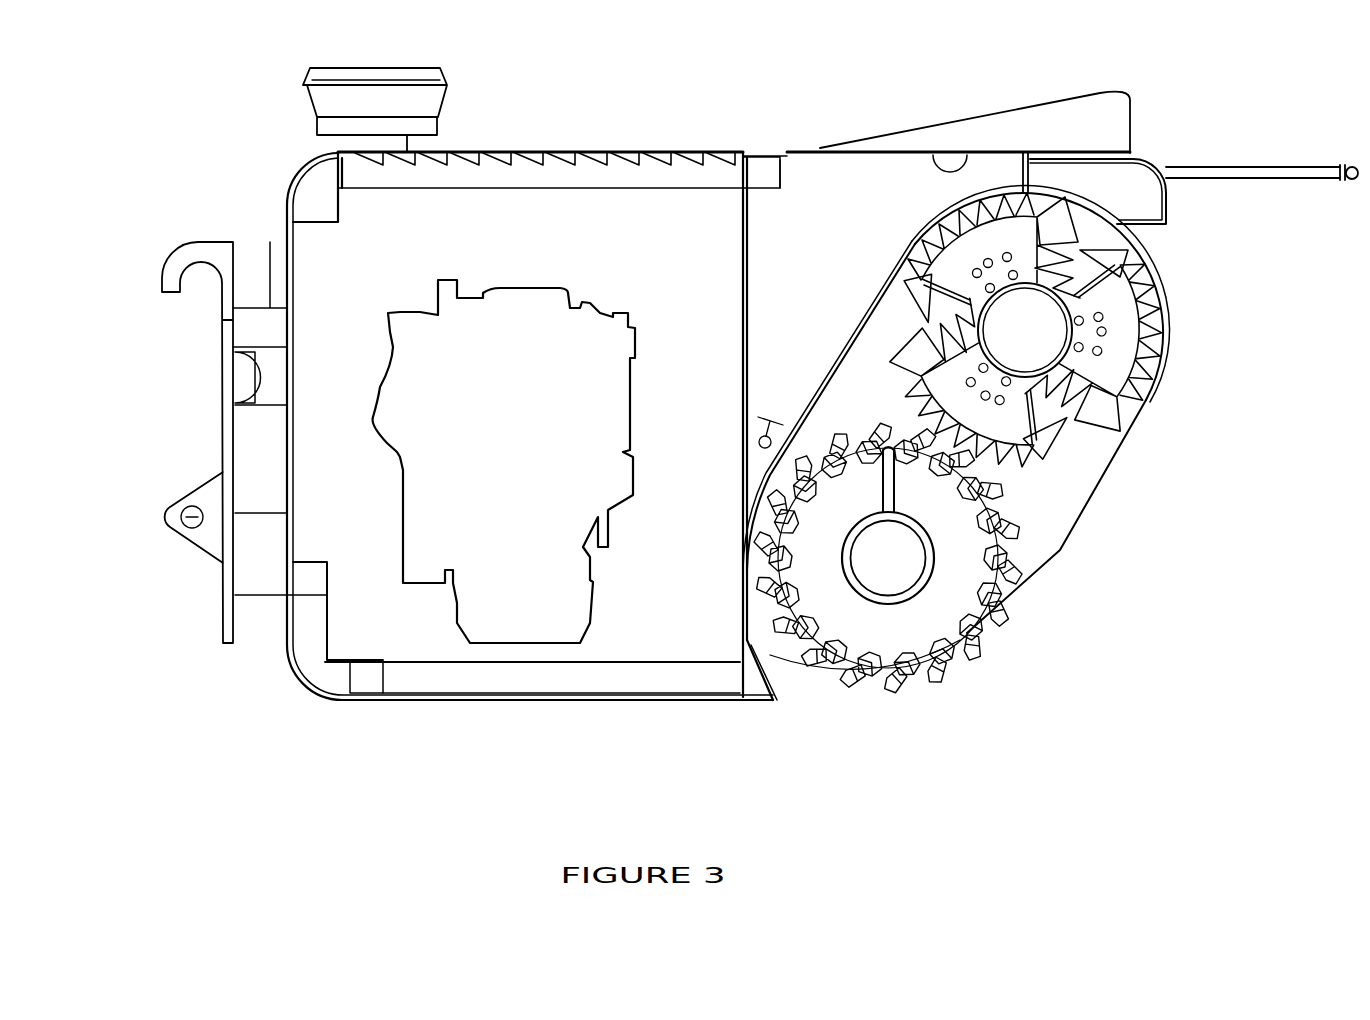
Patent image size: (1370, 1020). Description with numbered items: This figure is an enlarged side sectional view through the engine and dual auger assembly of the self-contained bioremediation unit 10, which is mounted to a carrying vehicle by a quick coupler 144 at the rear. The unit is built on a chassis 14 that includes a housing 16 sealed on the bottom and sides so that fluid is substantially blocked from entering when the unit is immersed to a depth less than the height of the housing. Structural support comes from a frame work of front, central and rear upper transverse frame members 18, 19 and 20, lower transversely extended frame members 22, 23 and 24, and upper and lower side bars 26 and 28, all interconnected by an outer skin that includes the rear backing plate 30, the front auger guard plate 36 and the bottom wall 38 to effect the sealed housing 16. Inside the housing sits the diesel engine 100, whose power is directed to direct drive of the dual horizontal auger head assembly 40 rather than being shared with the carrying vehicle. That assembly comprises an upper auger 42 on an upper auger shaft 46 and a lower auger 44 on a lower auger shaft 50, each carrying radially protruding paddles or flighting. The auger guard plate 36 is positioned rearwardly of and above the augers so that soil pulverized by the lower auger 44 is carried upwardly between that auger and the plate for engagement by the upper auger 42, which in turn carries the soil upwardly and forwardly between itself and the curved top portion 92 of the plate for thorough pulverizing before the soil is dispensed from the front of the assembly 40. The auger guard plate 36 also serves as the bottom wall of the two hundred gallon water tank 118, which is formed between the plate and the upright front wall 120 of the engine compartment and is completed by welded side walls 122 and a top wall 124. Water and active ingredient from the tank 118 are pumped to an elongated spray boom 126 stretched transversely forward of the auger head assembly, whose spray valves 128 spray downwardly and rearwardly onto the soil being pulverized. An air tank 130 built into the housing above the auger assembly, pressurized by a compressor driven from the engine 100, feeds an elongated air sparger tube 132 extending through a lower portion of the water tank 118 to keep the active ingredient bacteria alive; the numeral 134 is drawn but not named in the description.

The self-contained bioremediation unit 10 is at (1192, 124).
The chassis 14 is at (652, 702).
The housing 16 is at (288, 228).
The front upper transverse frame member 18 is at (1028, 173).
The central upper transverse frame member 19 is at (783, 173).
The rear upper transverse frame member 20 is at (337, 187).
The lower transversely extended frame member 22 is at (352, 675).
The lower transversely extended frame member 23 is at (322, 640).
The lower transversely extended frame member 24 is at (300, 580).
The upper side bar 26 is at (578, 177).
The lower side bar 28 is at (577, 680).
The rear backing plate 30 is at (288, 430).
The front auger guard plate 36 is at (777, 683).
The bottom wall 38 is at (502, 702).
The dual horizontal auger head assembly 40 is at (967, 354).
The upper auger 42 is at (1085, 346).
The lower auger 44 is at (951, 558).
The upper auger shaft 46 is at (1065, 346).
The lower auger shaft 50 is at (975, 558).
The curved top portion 92 is at (1110, 197).
The diesel engine 100 is at (492, 465).
The water tank 118 is at (826, 242).
The upright front wall 120 is at (742, 248).
The side wall 122 is at (887, 203).
The top wall 124 is at (982, 150).
The spray boom 126 is at (1357, 165).
The spray valve 128 is at (1345, 182).
The air tank 130 is at (1130, 212).
The air sparger tube 132 is at (762, 430).
The partition edge 134 is at (745, 375).
The quick coupler 144 is at (222, 300).